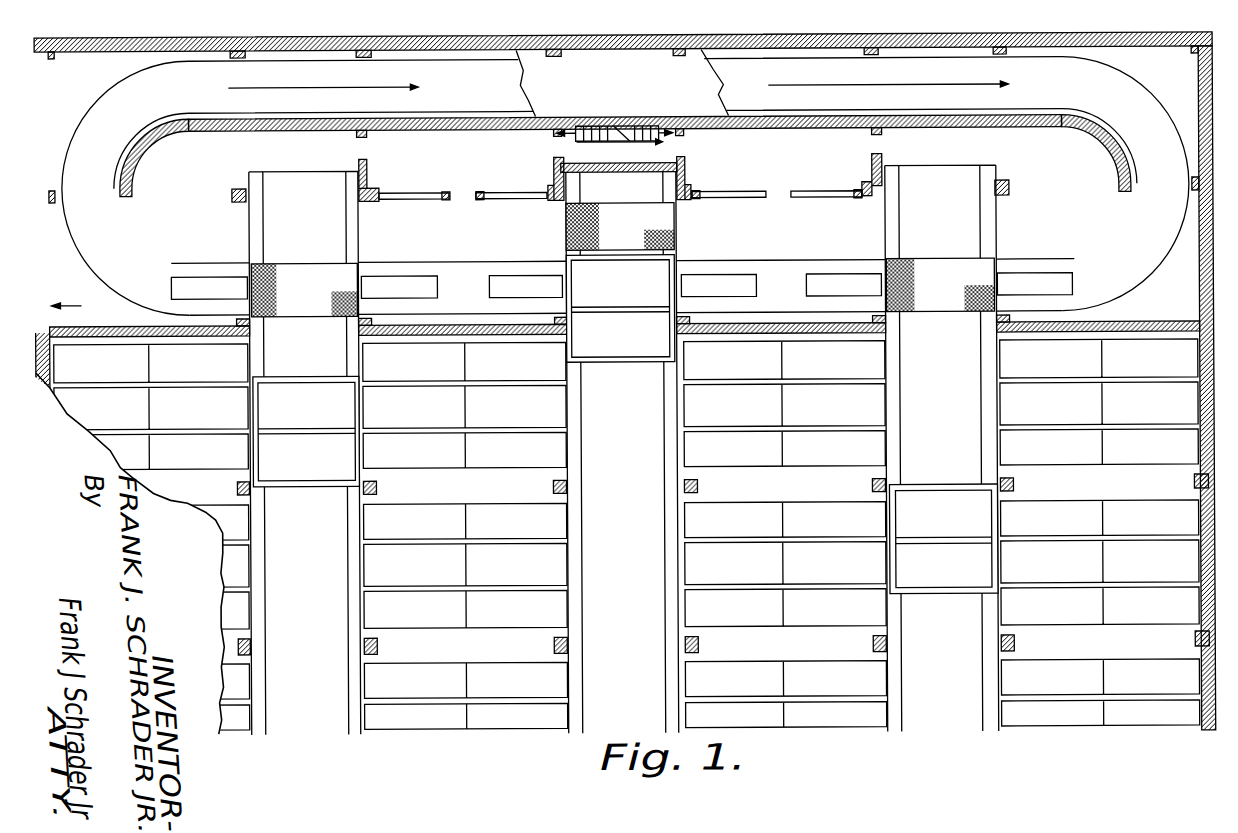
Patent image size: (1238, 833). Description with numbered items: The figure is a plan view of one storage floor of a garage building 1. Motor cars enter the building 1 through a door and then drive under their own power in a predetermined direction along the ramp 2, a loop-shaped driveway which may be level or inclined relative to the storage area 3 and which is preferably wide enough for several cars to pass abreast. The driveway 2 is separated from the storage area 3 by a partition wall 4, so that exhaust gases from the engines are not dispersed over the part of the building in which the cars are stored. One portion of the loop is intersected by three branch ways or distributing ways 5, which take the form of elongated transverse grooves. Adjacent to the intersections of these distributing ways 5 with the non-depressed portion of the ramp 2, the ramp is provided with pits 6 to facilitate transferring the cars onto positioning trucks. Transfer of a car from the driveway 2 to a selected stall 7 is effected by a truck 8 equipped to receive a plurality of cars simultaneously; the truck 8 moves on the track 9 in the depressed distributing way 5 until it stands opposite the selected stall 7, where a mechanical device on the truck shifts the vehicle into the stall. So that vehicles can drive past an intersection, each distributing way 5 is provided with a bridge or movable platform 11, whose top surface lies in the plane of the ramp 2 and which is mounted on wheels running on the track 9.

The building 1 is at (72, 310).
The ramp 2 is at (103, 229).
The storage area 3 is at (625, 567).
The partition wall 4 is at (47, 277).
The distributing way 5 is at (622, 444).
The pit 6 is at (200, 288).
The stall 7 is at (490, 523).
The truck 8 is at (306, 356).
The track 9 is at (343, 596).
The movable platform 11 is at (290, 278).